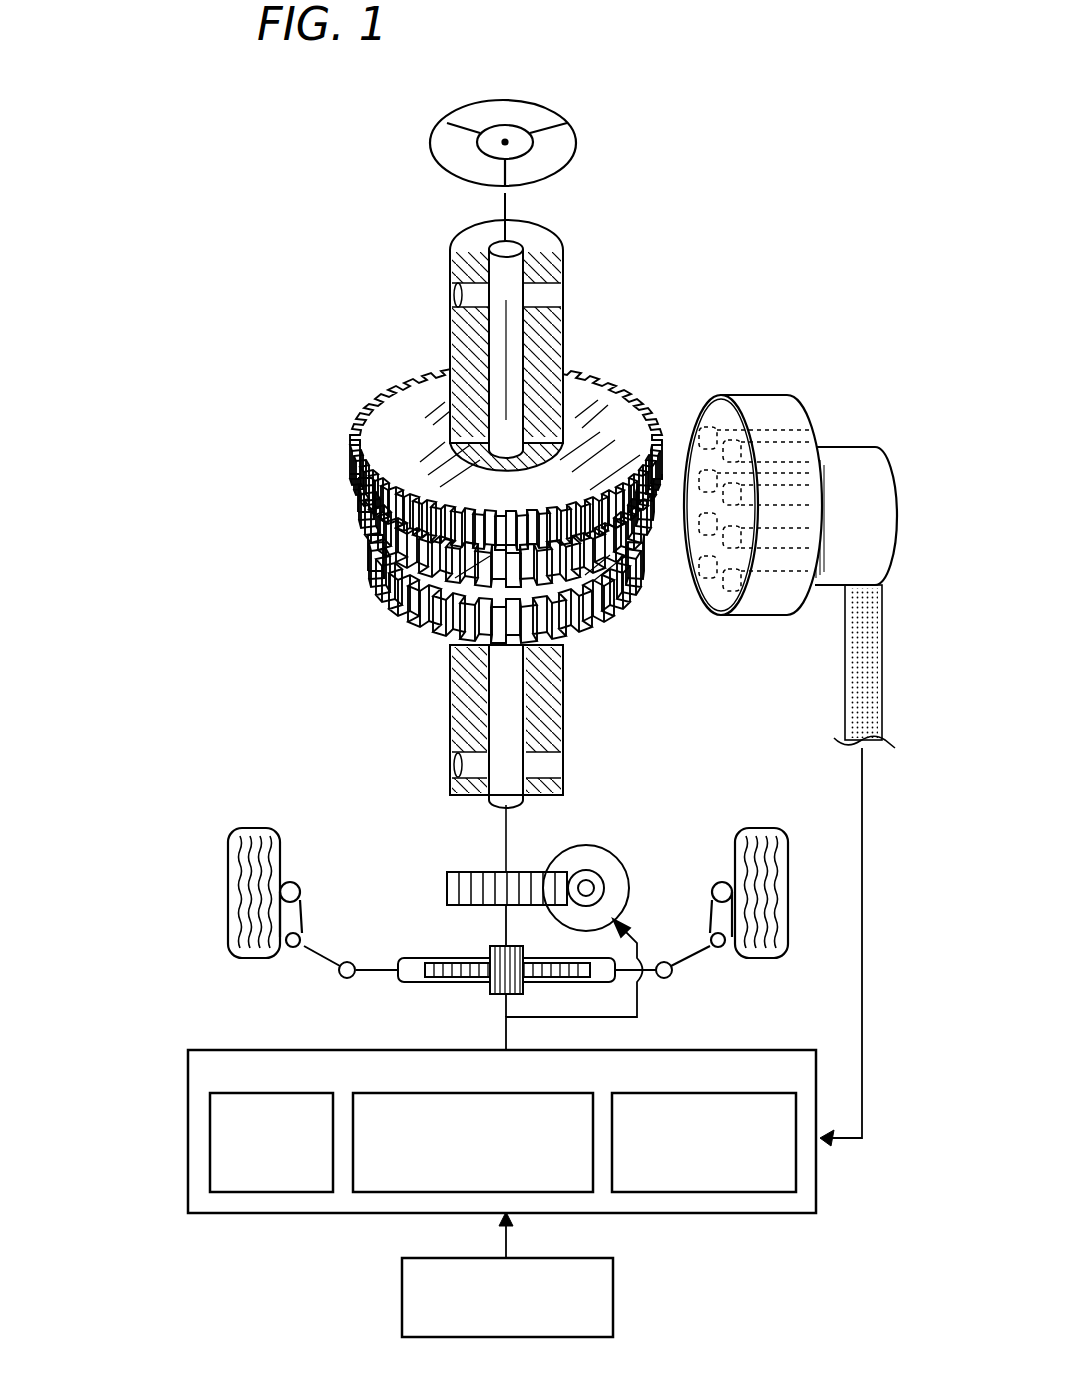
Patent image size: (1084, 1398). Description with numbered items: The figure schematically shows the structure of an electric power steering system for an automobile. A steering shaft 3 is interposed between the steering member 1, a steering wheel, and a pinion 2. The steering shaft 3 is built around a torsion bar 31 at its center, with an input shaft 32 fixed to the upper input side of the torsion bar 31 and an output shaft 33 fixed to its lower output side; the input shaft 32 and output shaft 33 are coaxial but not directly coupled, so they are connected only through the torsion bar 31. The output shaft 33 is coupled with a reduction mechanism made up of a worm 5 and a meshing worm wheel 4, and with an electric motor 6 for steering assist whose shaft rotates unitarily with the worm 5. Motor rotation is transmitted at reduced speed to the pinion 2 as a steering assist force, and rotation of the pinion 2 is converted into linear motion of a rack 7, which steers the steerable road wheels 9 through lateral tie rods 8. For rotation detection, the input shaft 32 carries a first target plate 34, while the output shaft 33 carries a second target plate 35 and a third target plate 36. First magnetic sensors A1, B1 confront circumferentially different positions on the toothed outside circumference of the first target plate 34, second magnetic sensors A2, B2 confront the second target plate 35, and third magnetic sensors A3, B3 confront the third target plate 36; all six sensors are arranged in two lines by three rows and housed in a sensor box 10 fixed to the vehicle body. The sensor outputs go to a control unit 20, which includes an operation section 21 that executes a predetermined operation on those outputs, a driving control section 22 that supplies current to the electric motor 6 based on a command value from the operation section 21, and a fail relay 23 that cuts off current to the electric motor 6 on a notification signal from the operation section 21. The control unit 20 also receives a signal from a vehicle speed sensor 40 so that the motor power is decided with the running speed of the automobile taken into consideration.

The steering member 1 is at (577, 136).
The pinion 2 is at (486, 956).
The steering shaft 3 is at (557, 224).
The worm wheel 4 is at (452, 870).
The worm 5 is at (600, 872).
The electric motor 6 is at (578, 846).
The rack 7 is at (557, 960).
The tie rods 8 is at (322, 962).
The steerable road wheels 9 is at (247, 827).
The sensor box 10 is at (757, 395).
The control unit 20 is at (188, 1062).
The operation section 21 is at (797, 1165).
The driving control section 22 is at (373, 1193).
The fail relay 23 is at (238, 1193).
The torsion bar 31 is at (512, 382).
The input shaft 32 is at (458, 340).
The output shaft 33 is at (507, 837).
The first target plate 34 is at (403, 437).
The second target plate 35 is at (356, 532).
The third target plate 36 is at (366, 598).
The vehicle speed sensor 40 is at (614, 1284).
The first magnetic sensor A1 is at (750, 435).
The second magnetic sensor A2 is at (825, 478).
The third magnetic sensor A3 is at (750, 603).
The first magnetic sensor B1 is at (700, 445).
The second magnetic sensor B2 is at (692, 500).
The third magnetic sensor B3 is at (700, 545).